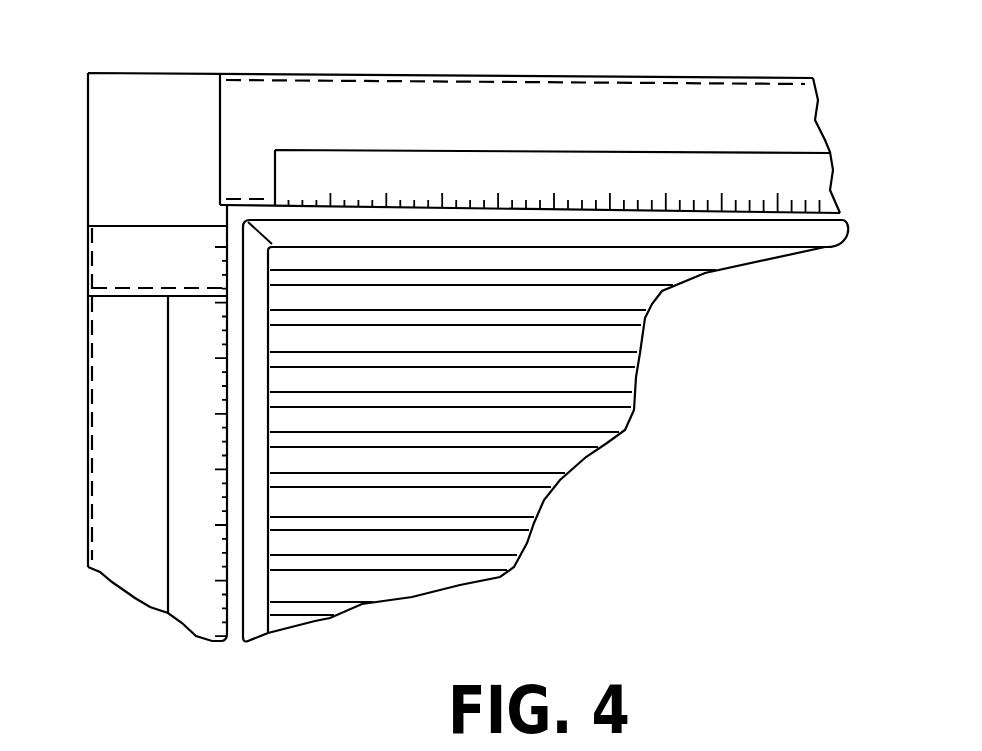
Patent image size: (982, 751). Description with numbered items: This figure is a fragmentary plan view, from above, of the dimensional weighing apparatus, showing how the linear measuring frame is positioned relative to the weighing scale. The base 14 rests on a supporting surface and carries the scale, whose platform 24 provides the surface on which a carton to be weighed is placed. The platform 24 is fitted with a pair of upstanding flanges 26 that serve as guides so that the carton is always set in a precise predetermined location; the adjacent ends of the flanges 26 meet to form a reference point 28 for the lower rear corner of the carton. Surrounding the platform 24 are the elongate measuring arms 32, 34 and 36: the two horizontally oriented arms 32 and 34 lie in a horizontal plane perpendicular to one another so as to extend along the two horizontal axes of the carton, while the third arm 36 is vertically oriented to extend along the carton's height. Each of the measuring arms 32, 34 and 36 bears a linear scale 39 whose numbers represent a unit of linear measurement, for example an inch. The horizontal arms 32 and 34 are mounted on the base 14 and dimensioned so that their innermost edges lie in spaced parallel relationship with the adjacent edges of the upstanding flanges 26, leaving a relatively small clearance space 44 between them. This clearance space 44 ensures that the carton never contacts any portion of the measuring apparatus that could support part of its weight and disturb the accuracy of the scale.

The base 14 is at (128, 73).
The platform 24 is at (603, 420).
The upstanding flanges 26 is at (755, 238).
The reference point 28 is at (248, 222).
The measuring arm 32 is at (590, 75).
The measuring arm 34 is at (88, 455).
The measuring arm 36 is at (117, 226).
The linear scale 39 is at (465, 167).
The clearance space 44 is at (842, 220).